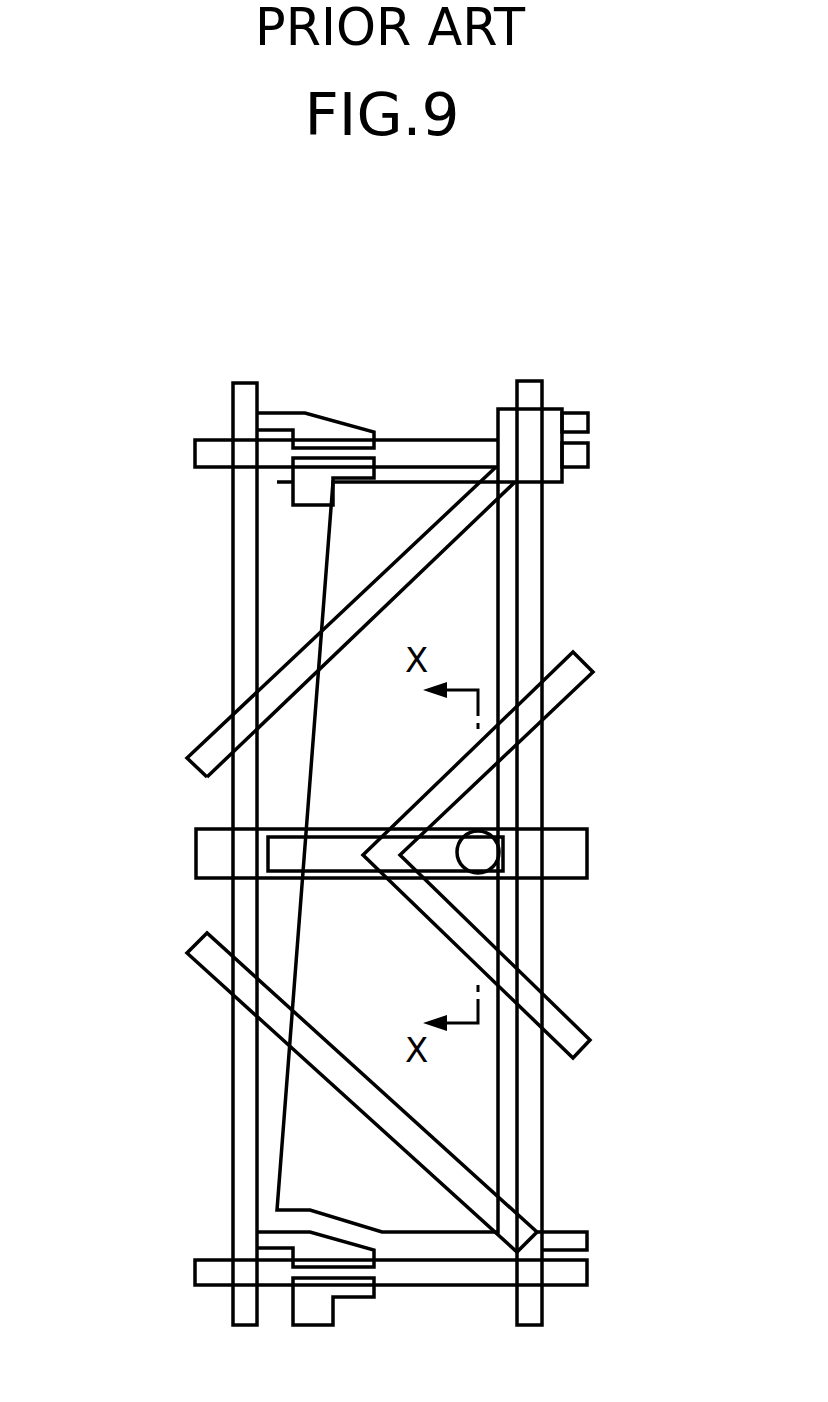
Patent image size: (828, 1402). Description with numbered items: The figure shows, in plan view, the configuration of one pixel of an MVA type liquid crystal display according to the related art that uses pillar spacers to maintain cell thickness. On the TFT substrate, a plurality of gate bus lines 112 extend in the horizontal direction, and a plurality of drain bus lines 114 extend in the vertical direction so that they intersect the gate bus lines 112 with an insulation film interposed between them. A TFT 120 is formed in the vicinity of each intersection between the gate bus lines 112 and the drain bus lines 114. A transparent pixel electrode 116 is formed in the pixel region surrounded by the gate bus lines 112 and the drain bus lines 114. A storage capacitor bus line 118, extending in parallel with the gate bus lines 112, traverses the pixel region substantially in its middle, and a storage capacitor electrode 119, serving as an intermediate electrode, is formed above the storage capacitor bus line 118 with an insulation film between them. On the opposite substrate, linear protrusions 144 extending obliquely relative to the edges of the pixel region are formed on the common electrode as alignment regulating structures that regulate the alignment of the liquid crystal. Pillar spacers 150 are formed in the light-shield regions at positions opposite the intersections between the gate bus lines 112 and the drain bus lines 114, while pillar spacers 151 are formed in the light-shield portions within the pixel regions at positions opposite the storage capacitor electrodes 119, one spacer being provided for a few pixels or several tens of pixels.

The gate bus line 112 is at (203, 453).
The drain bus line 114 is at (245, 387).
The pixel electrode 116 is at (283, 562).
The storage capacitor bus line 118 is at (195, 857).
The storage capacitor electrode 119 is at (313, 833).
The TFT 120 is at (337, 405).
The linear protrusion 144 is at (430, 553).
The pillar spacer 150 is at (562, 480).
The pillar spacer 151 is at (483, 875).